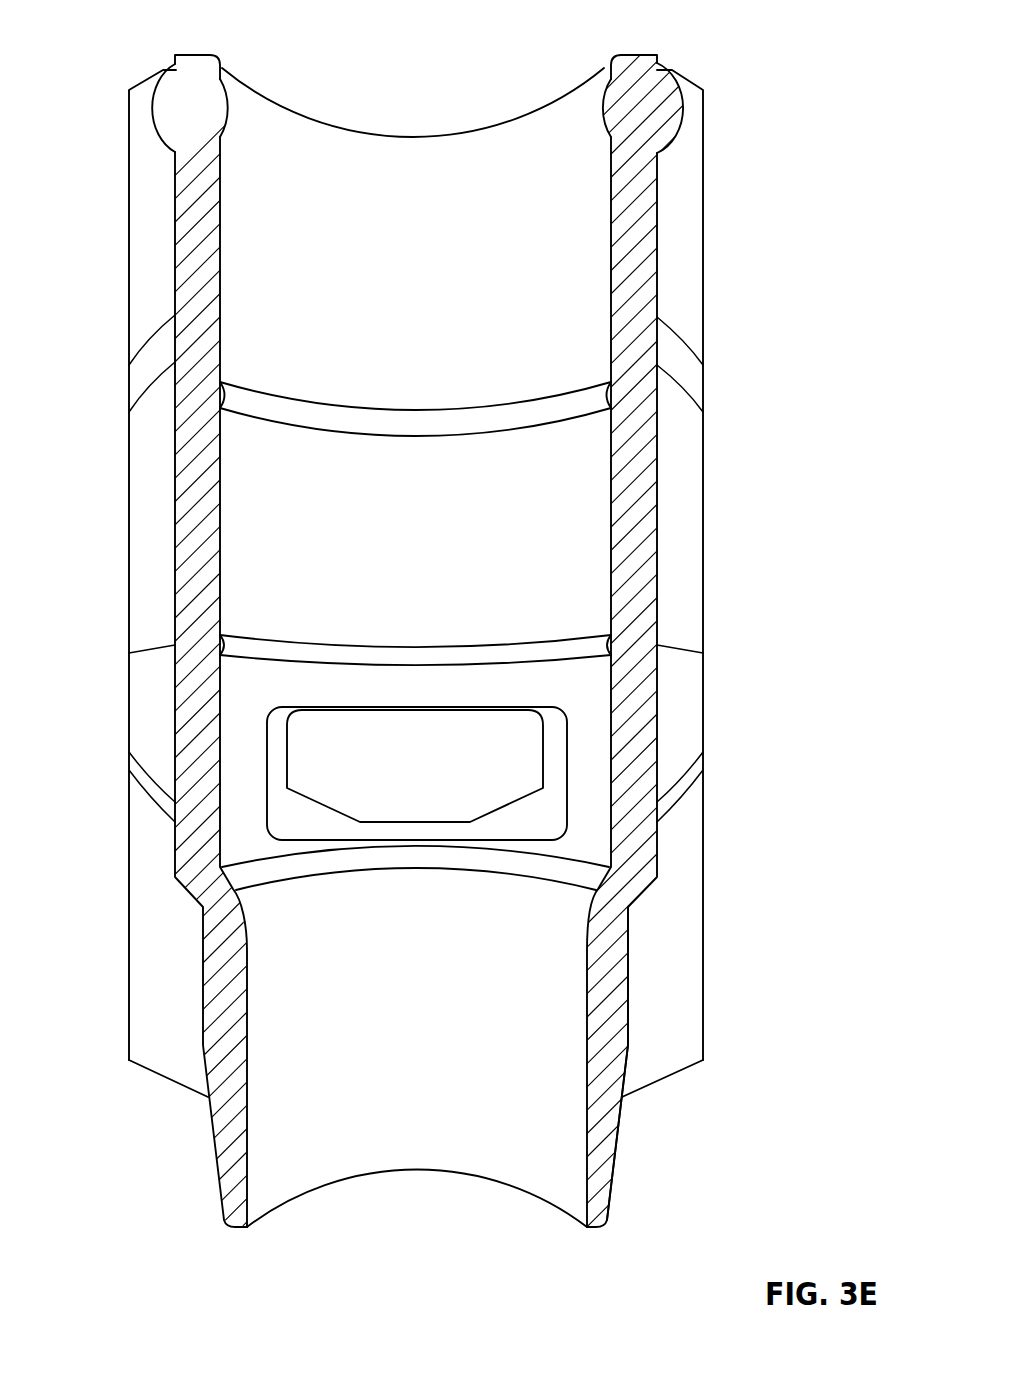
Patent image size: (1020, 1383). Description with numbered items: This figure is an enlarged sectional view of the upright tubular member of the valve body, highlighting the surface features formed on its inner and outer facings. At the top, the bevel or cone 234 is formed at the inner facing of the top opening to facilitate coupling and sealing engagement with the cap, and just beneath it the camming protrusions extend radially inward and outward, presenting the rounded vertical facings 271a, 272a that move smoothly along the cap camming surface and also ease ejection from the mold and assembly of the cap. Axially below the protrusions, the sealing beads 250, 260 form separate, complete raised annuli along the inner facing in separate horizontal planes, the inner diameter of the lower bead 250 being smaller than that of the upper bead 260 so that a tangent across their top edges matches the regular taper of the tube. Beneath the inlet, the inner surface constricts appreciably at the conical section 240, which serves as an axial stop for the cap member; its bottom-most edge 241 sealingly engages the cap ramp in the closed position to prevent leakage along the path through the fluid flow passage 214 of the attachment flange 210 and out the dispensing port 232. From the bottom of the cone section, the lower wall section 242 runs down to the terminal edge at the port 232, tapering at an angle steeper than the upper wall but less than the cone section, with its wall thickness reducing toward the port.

The attachment flange 210 is at (682, 1037).
The fluid flow passage 214 is at (392, 788).
The dispensing port 232 is at (603, 1228).
The bevel or cone 234 is at (219, 60).
The conical section 240 is at (205, 995).
The bottom-most edge 241 is at (584, 875).
The lower wall section 242 is at (622, 988).
The lower sealing bead 250 is at (584, 647).
The upper sealing bead 260 is at (588, 410).
The inner vertical facing 271a is at (604, 98).
The outer vertical facing 272a is at (684, 114).